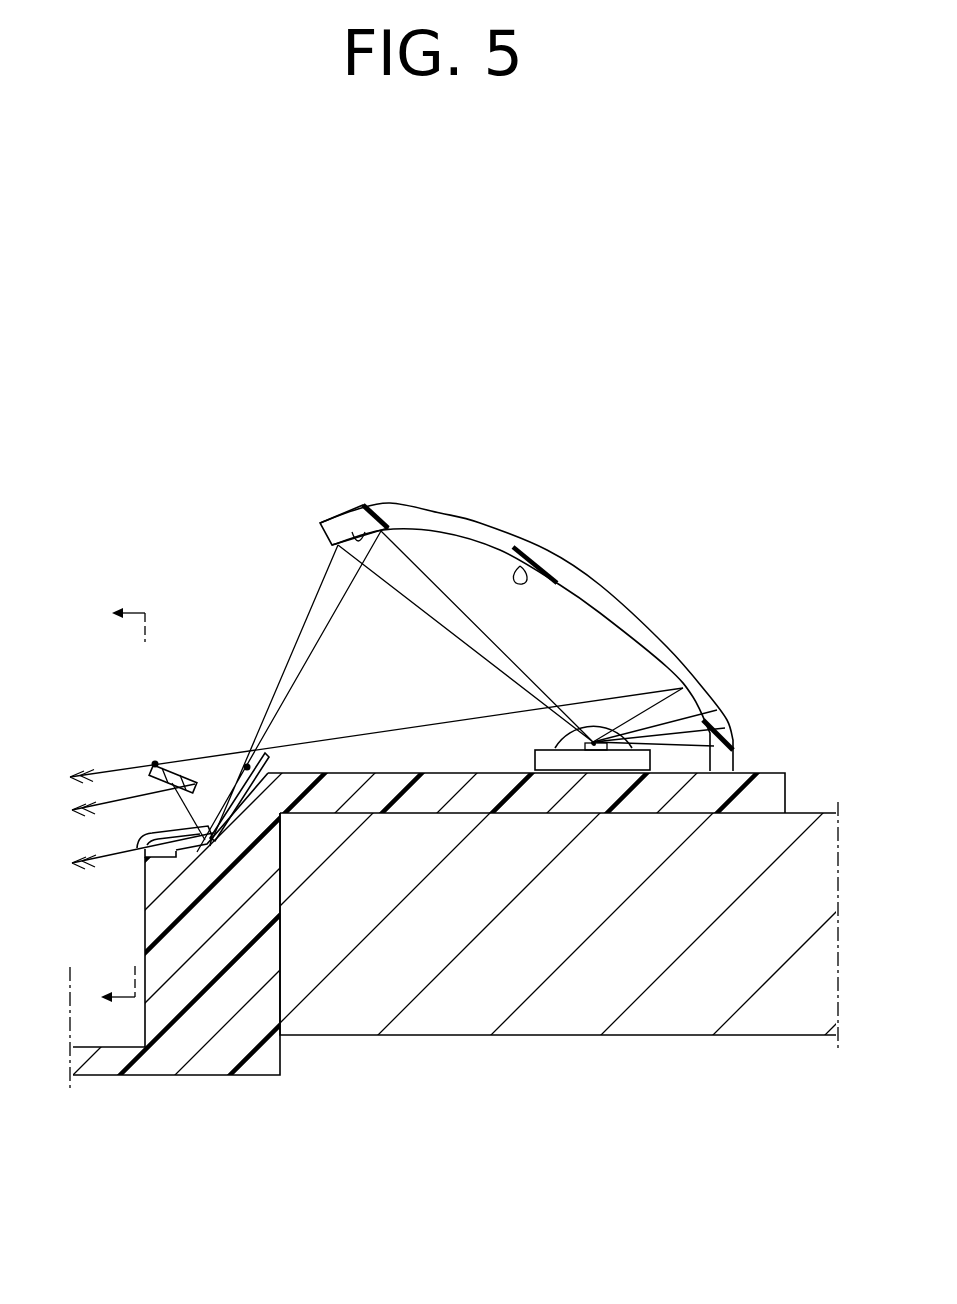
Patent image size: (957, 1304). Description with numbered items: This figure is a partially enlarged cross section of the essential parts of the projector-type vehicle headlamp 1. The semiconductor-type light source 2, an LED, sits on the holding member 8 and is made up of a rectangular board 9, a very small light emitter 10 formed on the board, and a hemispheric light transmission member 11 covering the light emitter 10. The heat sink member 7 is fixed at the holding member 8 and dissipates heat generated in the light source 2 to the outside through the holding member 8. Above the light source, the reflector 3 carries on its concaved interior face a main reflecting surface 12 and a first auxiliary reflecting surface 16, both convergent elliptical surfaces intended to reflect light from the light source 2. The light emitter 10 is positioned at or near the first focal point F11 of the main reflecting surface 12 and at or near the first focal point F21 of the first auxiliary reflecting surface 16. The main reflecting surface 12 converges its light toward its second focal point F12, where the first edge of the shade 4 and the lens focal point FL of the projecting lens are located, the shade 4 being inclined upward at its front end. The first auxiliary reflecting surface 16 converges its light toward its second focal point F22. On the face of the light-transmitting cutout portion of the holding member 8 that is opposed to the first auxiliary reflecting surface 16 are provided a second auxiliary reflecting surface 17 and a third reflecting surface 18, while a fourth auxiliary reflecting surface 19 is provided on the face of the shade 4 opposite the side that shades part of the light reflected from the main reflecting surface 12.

The vehicle headlamp 1 is at (203, 545).
The semiconductor-type light source 2 is at (526, 748).
The reflector 3 is at (488, 519).
The shade 4 is at (173, 760).
The heat sink member 7 is at (654, 1027).
The holding member 8 is at (217, 1060).
The rectangular board 9 is at (735, 741).
The light emitter 10 is at (683, 688).
The hemispheric light transmission member 11 is at (707, 712).
The main reflecting surface 12 is at (562, 560).
The first auxiliary reflecting surface 16 is at (352, 530).
The second auxiliary reflecting surface 17 is at (268, 748).
The third reflecting surface 18 is at (137, 846).
The fourth auxiliary reflecting surface 19 is at (148, 779).
The first focal point of the main reflecting surface F11 is at (593, 740).
The first focal point of the first auxiliary reflecting surface F21 is at (593, 742).
The second focal point of the main reflecting surface F12 is at (154, 762).
The lens focal point FL is at (155, 764).
The second focal point of the first auxiliary reflecting surface F22 is at (244, 766).